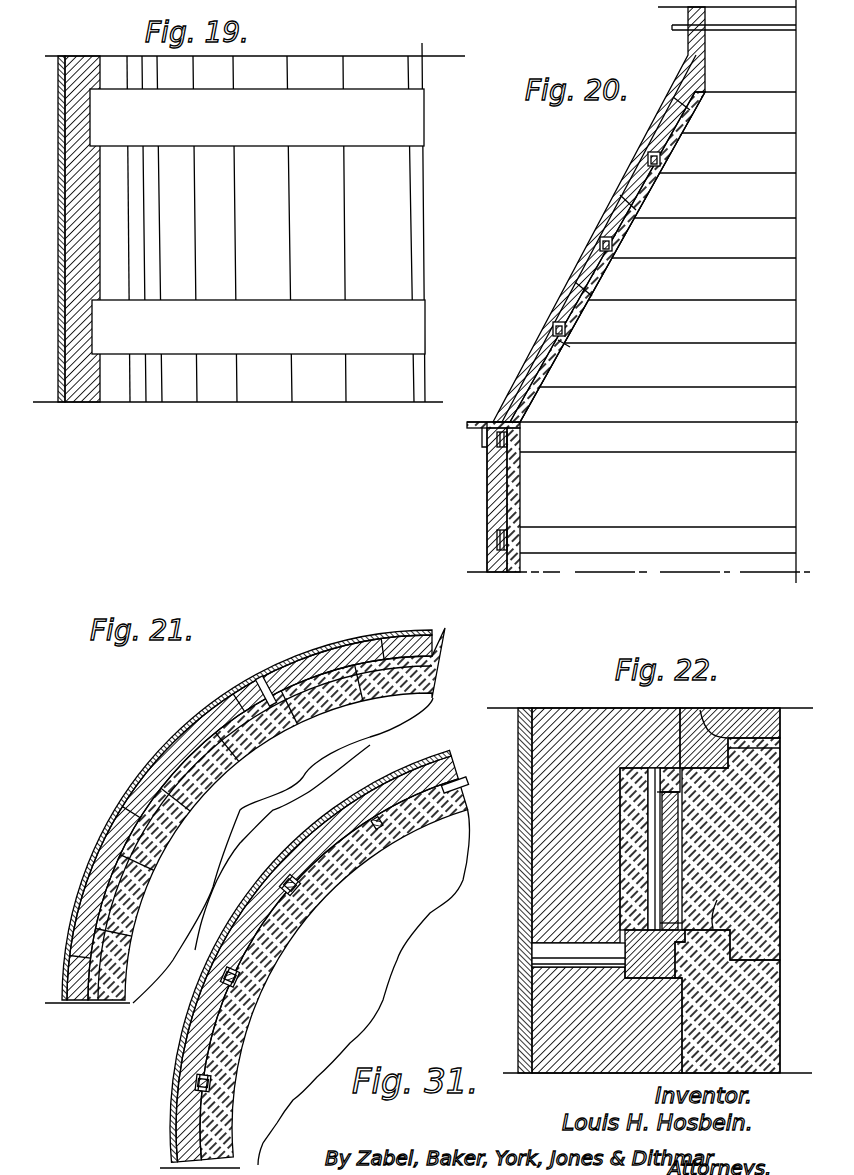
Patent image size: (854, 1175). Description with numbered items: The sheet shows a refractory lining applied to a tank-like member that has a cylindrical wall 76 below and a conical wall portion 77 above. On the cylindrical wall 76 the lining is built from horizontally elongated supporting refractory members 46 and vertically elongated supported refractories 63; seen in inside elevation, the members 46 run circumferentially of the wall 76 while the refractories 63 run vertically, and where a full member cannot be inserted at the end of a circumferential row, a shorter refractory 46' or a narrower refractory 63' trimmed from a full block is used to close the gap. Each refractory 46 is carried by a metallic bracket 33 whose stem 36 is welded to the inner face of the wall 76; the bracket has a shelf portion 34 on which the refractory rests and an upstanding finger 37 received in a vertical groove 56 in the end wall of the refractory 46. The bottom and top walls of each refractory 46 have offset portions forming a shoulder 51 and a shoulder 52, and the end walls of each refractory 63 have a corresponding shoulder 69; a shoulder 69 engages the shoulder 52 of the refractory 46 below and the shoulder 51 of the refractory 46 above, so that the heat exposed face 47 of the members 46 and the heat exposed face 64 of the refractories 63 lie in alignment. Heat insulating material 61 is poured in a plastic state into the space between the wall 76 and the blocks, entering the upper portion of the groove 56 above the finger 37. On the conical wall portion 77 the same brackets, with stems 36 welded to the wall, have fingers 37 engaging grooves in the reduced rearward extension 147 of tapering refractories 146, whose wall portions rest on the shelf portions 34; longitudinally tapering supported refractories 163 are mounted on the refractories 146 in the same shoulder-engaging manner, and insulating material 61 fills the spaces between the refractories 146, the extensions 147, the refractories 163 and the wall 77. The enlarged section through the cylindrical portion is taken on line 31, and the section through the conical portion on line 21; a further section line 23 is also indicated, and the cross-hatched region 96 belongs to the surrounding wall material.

In FIG. 19, the supporting refractory member 46 is at (245, 230).
In FIG. 20, the supporting refractory member 46 is at (638, 332).
In FIG. 31, the supporting refractory member 46 is at (334, 969).
In FIG. 19, the shorter refractory 46' is at (112, 233).
In FIG. 19, the heat insulating material 61 is at (80, 191).
In FIG. 20, the heat insulating material 61 is at (573, 267).
In FIG. 21, the heat insulating material 61 is at (127, 810).
In FIG. 31, the heat insulating material 61 is at (405, 753).
In FIG. 22, the heat insulating material 61 is at (662, 775).
In FIG. 19, the supported refractory 63 is at (245, 222).
In FIG. 20, the supported refractory 63 is at (515, 497).
In FIG. 22, the supported refractory 63 is at (716, 873).
In FIG. 19, the narrower refractory 63' is at (77, 229).
In FIG. 19, the cylindrical wall 76 is at (59, 259).
In FIG. 20, the cylindrical wall 76 is at (487, 485).
In FIG. 31, the cylindrical wall 76 is at (345, 792).
In FIG. 22, the cylindrical wall 76 is at (520, 903).
In FIG. 20, the conical wall portion 77 is at (562, 285).
In FIG. 21, the conical wall portion 77 is at (193, 715).
In FIG. 20, the tapering refractory 146 is at (673, 153).
In FIG. 21, the tapering refractory 146 is at (287, 727).
In FIG. 20, the reduced rearward extension 147 is at (553, 305).
In FIG. 21, the reduced rearward extension 147 is at (62, 938).
In FIG. 20, the supported refractory 163 is at (643, 193).
In FIG. 20, the stem 36 is at (635, 163).
In FIG. 31, the stem 36 is at (290, 885).
In FIG. 22, the stem 36 is at (563, 965).
In FIG. 20, the finger 37 is at (647, 153).
In FIG. 31, the finger 37 is at (377, 823).
In FIG. 22, the finger 37 is at (667, 813).
In FIG. 20, the shelf portion 34 is at (565, 353).
In FIG. 22, the shelf portion 34 is at (680, 923).
In FIG. 20, the section line 21— 21 is at (514, 368).
In FIG. 20, the section line 23 is at (497, 383).
In FIG. 20, the section line 31— 31 is at (483, 545).
In FIG. 22, the section line 31— 31 is at (459, 1070).
In FIG. 21, the vertically extending groove 56 is at (268, 687).
In FIG. 31, the vertically extending groove 56 is at (457, 777).
In FIG. 22, the vertically extending groove 56 is at (648, 835).
In FIG. 22, the shoulder 69 is at (713, 928).
In FIG. 22, the shoulder 52 is at (780, 745).
In FIG. 22, the filler block 96 is at (753, 807).
In FIG. 22, the inner heat exposed face 47 is at (803, 846).
In FIG. 22, the shoulder 51 is at (782, 933).
In FIG. 22, the inner heat exposed face 64 is at (783, 1042).
In FIG. 22, the bracket 33 is at (667, 977).